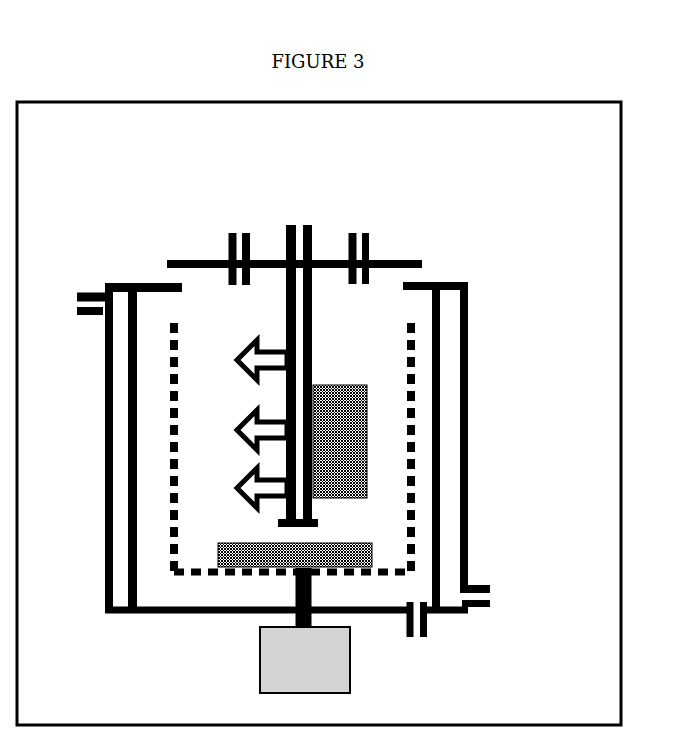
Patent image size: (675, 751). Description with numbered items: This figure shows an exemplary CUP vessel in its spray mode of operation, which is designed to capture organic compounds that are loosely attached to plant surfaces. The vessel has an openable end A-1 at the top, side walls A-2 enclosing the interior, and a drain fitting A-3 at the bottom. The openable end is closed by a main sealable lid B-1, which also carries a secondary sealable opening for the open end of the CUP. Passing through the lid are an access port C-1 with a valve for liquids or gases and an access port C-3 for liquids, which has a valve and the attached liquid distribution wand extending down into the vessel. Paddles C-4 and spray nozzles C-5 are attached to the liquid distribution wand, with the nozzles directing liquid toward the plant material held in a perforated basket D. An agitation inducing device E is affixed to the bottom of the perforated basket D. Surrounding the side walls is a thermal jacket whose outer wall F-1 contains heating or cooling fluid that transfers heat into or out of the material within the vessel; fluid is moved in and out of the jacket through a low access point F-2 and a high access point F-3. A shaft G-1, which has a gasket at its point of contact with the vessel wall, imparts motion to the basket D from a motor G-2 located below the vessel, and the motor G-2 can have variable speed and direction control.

The openable end A-1 is at (145, 282).
The side walls A-2 is at (442, 312).
The drain fitting A-3 is at (423, 627).
The main sealable lid B-1 is at (408, 258).
The access port with valve for liquids or gases C-1 is at (230, 232).
The access port for liquids with valve and attached liquid distribution wand C-3 is at (305, 224).
The paddle C-4 is at (350, 430).
The spray nozzles C-5 is at (242, 485).
The perforated basket D is at (410, 355).
The agitation inducing device E is at (240, 545).
The outer wall of thermal jacket F-1 is at (469, 315).
The low access point F-2 is at (488, 585).
The high access point F-3 is at (88, 292).
The shaft G-1 is at (293, 590).
The motor G-2 is at (327, 667).